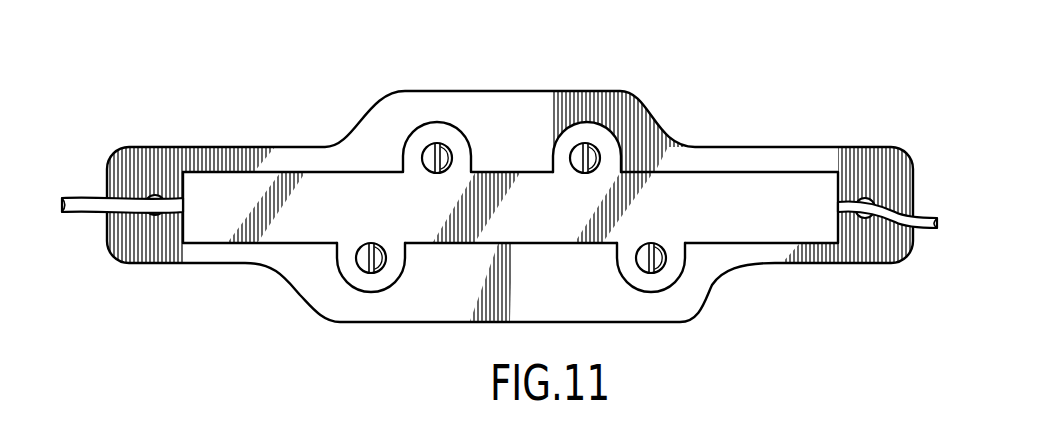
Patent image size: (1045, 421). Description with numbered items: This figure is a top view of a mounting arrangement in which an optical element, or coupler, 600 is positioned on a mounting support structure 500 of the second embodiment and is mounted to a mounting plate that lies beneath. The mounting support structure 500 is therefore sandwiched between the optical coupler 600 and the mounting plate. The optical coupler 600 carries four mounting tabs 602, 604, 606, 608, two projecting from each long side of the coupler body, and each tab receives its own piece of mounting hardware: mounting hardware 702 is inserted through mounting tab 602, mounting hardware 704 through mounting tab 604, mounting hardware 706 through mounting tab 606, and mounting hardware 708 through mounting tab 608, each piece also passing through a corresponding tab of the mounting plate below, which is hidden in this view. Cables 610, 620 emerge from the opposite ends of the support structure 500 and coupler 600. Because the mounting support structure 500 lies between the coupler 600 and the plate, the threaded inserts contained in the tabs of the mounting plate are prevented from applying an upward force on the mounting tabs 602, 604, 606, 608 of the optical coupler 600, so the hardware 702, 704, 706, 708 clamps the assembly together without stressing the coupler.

The mounting support structure 500 is at (787, 148).
The optical element (coupler) 600 is at (771, 222).
The mounting tab 602 is at (617, 257).
The mounting tab 604 is at (337, 263).
The mounting tab 606 is at (412, 128).
The mounting tab 608 is at (590, 127).
The cable 610 is at (92, 198).
The cable 620 is at (907, 197).
The mounting hardware 702 is at (657, 268).
The mounting hardware 704 is at (377, 267).
The mounting hardware 706 is at (447, 154).
The mounting hardware 708 is at (640, 143).